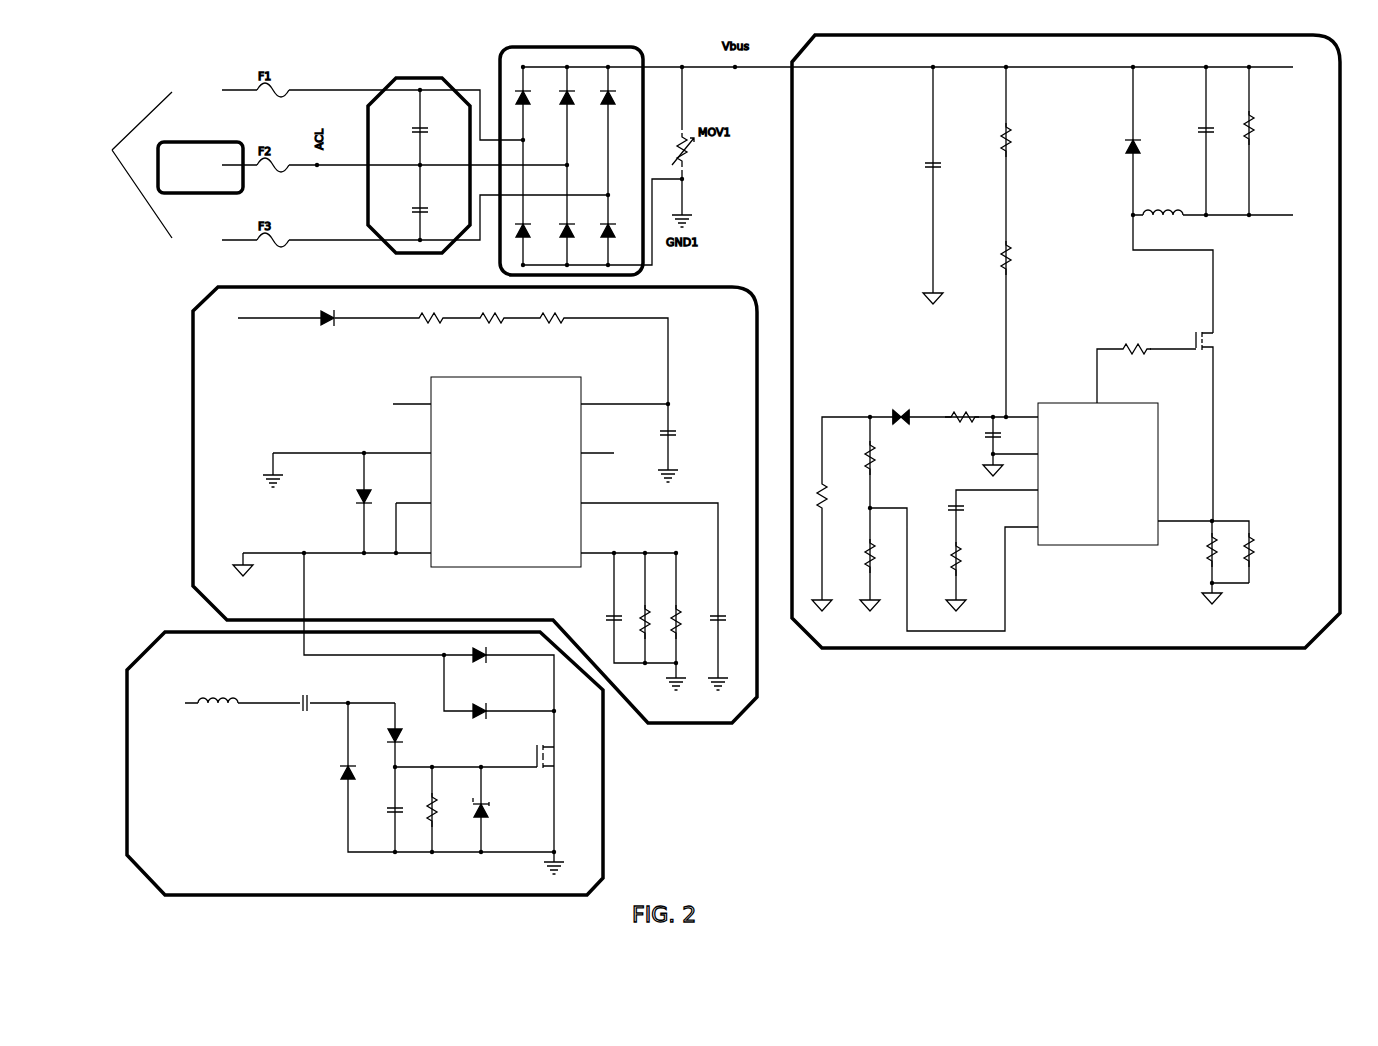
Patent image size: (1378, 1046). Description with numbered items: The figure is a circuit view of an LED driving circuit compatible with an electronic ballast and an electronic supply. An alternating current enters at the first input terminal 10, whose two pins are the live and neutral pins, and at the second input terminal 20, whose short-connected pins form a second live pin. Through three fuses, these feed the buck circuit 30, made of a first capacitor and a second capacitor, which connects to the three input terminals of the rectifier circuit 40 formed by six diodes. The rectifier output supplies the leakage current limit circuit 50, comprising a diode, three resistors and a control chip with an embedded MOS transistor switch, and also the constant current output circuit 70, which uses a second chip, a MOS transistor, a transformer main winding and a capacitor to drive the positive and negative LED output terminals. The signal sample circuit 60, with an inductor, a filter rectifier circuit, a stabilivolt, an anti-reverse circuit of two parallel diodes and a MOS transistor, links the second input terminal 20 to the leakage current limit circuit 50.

The first input terminal 10 is at (151, 165).
The second input terminal 20 is at (191, 142).
The buck circuit 30 is at (408, 84).
The rectifier circuit 40 is at (566, 47).
The leakage current limit circuit 50 is at (191, 405).
The signal sample circuit 60 is at (607, 803).
The constant current output circuit 70 is at (1040, 36).